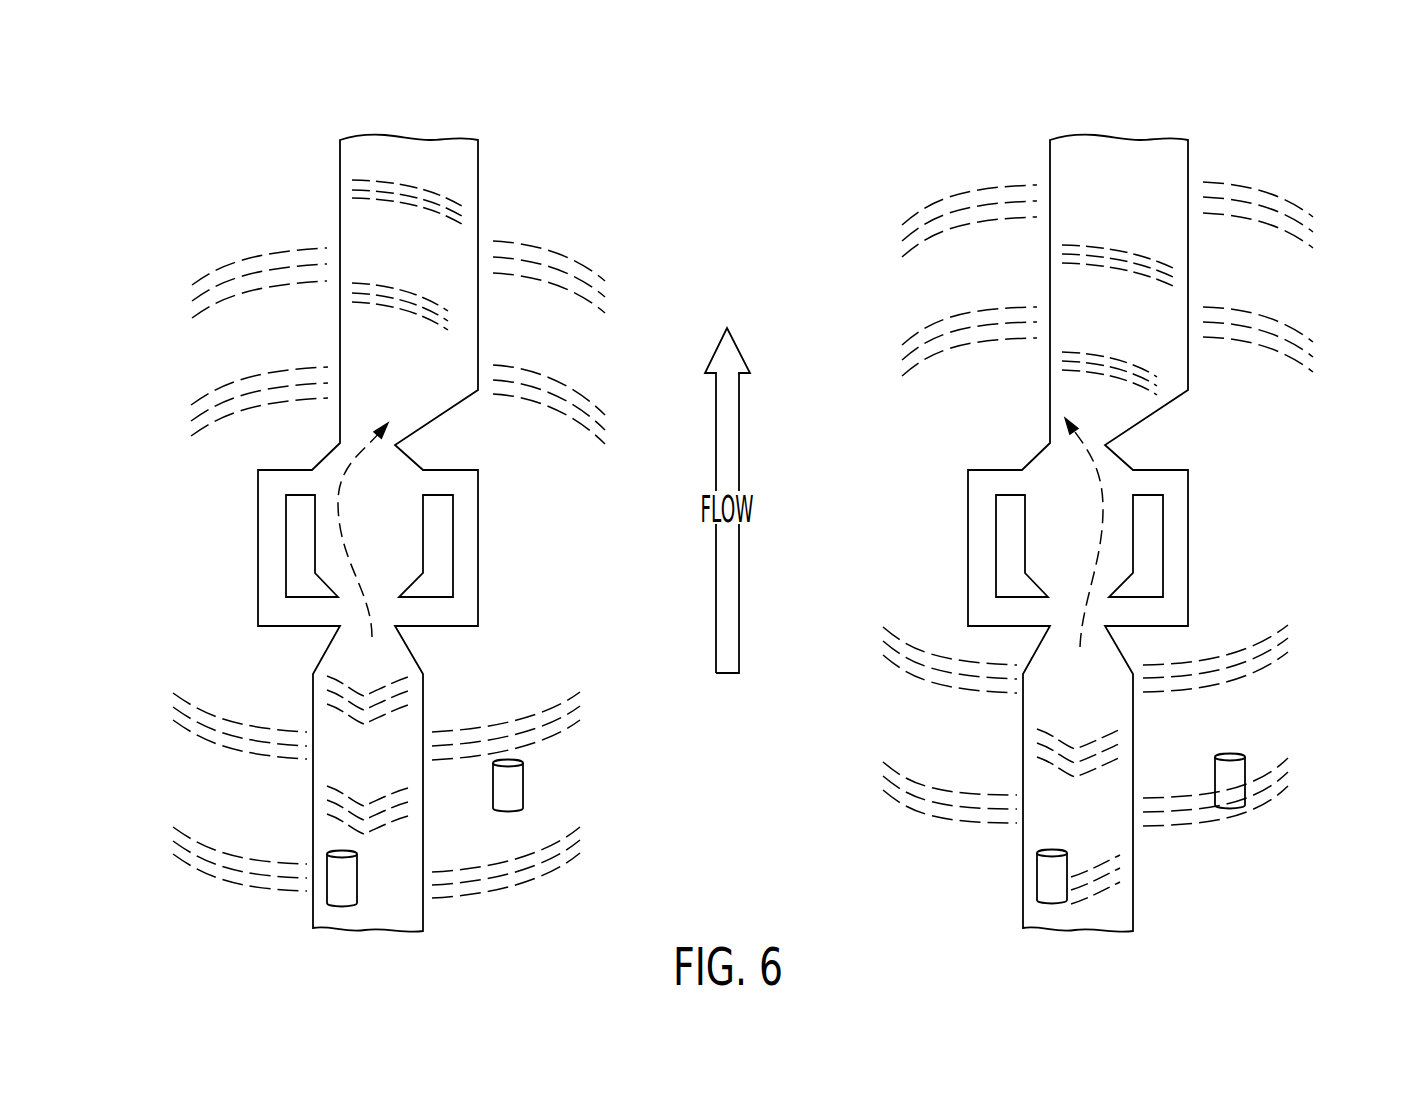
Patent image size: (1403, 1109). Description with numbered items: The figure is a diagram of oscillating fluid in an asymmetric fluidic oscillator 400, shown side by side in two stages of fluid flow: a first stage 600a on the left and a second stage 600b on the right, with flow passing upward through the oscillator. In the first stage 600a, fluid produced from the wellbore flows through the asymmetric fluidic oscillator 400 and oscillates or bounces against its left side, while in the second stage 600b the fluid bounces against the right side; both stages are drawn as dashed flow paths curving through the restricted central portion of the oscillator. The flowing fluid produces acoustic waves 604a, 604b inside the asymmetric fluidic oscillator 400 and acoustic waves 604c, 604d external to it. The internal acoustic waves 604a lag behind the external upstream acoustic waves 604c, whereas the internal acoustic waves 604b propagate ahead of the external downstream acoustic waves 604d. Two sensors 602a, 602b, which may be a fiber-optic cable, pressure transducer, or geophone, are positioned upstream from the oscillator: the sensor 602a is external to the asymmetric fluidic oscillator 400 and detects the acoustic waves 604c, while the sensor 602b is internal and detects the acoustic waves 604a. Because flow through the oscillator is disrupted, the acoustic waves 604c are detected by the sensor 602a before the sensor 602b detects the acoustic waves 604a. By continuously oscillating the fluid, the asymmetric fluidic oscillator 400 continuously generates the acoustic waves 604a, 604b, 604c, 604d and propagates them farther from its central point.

The first stage of fluid flow 600a is at (190, 157).
The second stage of fluid flow 600b is at (862, 144).
The asymmetric fluidic oscillator 400 is at (340, 160).
The acoustic waves 604a is at (403, 678).
The acoustic waves 604b is at (350, 301).
The acoustic waves 604c is at (203, 740).
The acoustic waves 604d is at (203, 398).
The sensor 602a is at (536, 786).
The sensor 602b is at (372, 877).